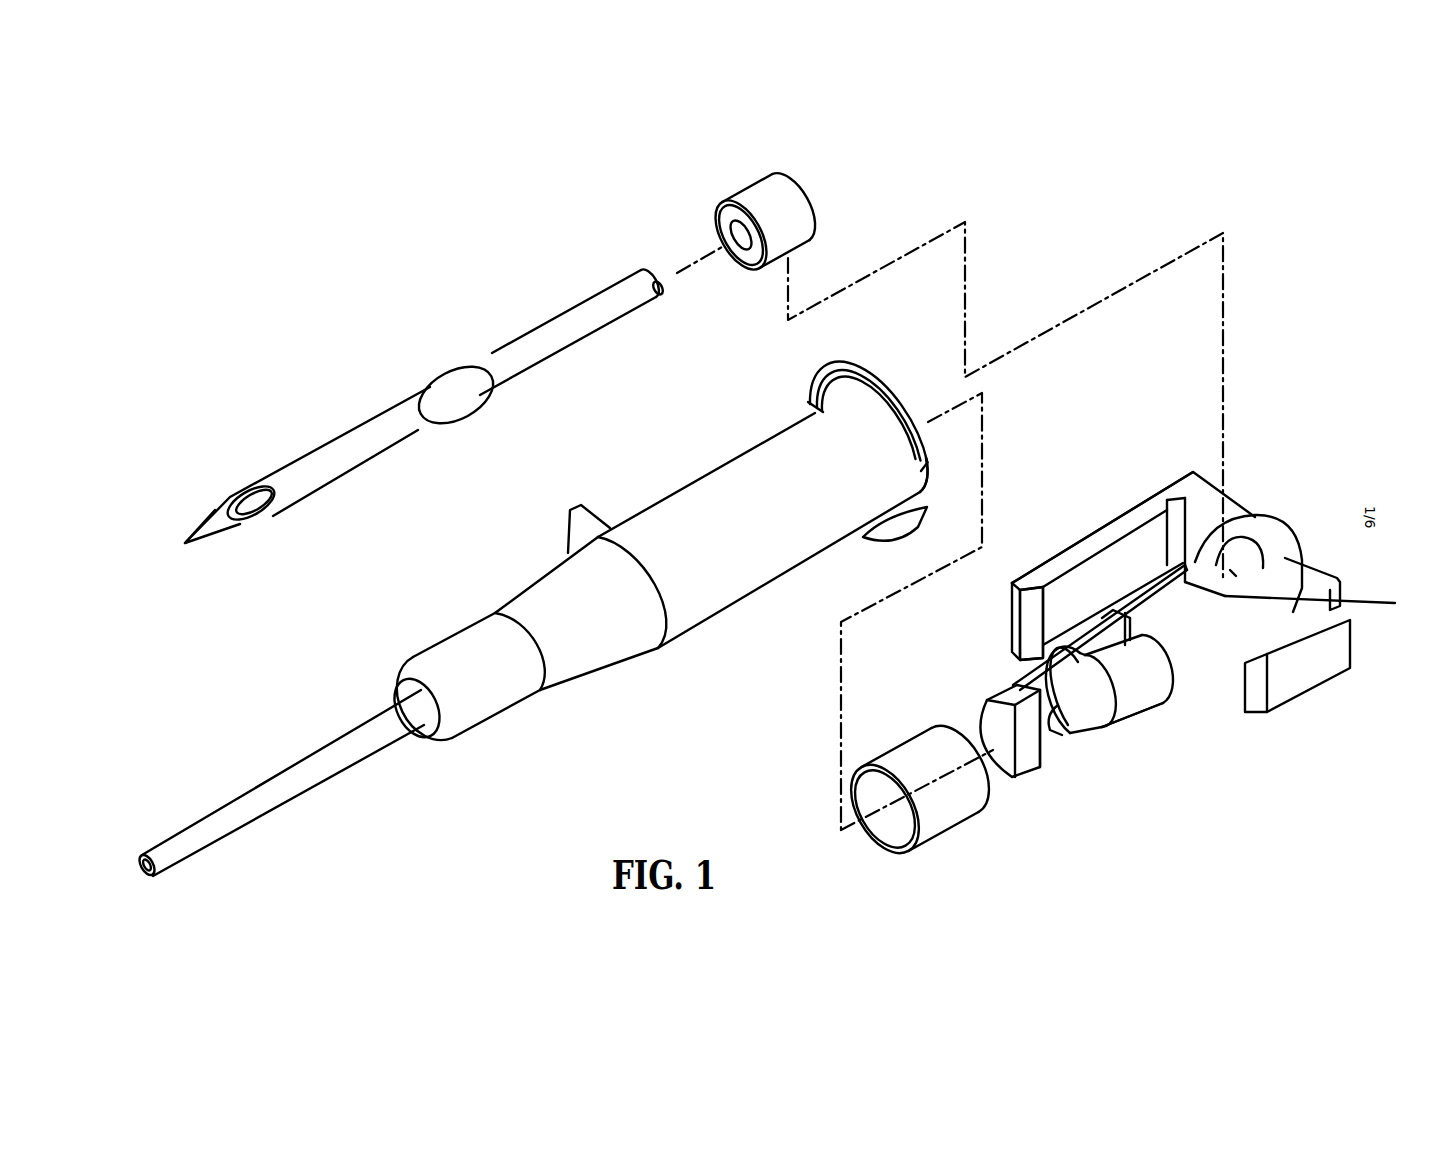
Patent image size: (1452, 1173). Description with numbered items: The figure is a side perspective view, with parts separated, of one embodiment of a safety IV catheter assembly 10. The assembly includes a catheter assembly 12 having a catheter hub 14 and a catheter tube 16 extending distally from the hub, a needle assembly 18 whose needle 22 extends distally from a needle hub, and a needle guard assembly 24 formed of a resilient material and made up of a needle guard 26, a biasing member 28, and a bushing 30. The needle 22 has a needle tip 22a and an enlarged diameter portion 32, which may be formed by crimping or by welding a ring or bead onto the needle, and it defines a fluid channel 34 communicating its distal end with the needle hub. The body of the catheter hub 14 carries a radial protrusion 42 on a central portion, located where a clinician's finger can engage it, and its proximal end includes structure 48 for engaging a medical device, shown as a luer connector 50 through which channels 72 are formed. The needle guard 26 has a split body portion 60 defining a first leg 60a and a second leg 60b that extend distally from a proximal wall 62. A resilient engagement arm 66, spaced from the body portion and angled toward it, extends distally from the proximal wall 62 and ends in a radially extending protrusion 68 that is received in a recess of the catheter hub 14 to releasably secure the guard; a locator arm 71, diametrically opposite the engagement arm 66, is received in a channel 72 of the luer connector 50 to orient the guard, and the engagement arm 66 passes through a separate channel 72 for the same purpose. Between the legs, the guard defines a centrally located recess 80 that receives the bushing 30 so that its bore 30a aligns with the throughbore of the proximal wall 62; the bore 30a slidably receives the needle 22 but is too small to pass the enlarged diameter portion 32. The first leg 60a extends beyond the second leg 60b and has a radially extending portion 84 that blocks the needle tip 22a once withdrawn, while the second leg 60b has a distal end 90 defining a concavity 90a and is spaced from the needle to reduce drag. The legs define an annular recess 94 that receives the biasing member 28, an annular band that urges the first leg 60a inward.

The safety IV catheter assembly 10 is at (458, 222).
The catheter assembly 12 is at (621, 682).
The catheter hub 14 is at (718, 605).
The catheter tube 16 is at (298, 790).
The needle assembly 18 is at (563, 392).
The needle 22 is at (380, 452).
The needle tip 22a is at (237, 520).
The needle guard assembly 24 is at (1109, 812).
The needle guard 26 is at (1278, 512).
The biasing member 28 is at (943, 834).
The bushing 30 is at (741, 180).
The bore 30a is at (740, 238).
The enlarged diameter portion 32 is at (437, 383).
The fluid channel 34 is at (243, 512).
The radial protrusion 42 is at (578, 528).
The structure for engaging a medical device 48 is at (872, 389).
The luer connector 50 is at (843, 392).
The split body portion 60 is at (1182, 700).
The first leg 60a is at (1017, 685).
The second leg 60b is at (1218, 682).
The proximal wall 62 is at (1228, 500).
The resilient engagement arm 66 is at (1077, 543).
The radially extending protrusion 68 is at (1043, 610).
The locator arm 71 is at (1303, 690).
The channel 72 is at (923, 478).
The recess 80 is at (1331, 604).
The radially extending portion 84 is at (1034, 744).
The distal end 90 is at (1090, 727).
The concavity 90a is at (1053, 728).
The annular recess 94 is at (1130, 710).